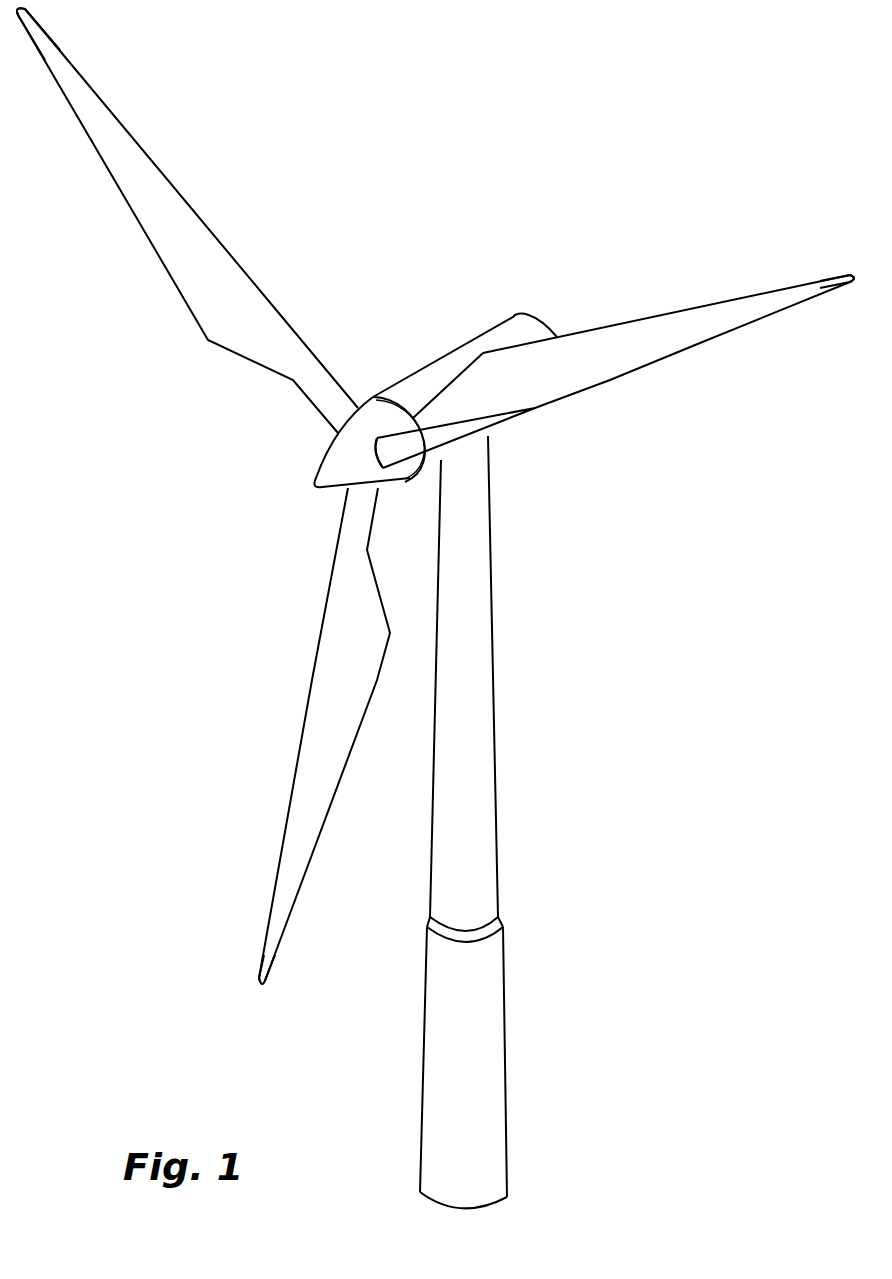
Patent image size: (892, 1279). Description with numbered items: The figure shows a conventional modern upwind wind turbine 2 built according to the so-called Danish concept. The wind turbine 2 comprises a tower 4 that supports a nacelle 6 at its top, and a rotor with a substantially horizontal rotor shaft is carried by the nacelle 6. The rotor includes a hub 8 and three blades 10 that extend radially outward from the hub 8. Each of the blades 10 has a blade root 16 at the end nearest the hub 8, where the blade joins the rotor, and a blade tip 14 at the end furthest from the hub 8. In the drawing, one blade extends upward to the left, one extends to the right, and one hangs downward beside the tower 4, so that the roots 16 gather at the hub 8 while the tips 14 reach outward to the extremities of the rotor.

The wind turbine 2 is at (592, 758).
The tower 4 is at (483, 682).
The nacelle 6 is at (427, 378).
The hub 8 is at (336, 464).
The blades 10 is at (220, 312).
The blade tip 14 is at (68, 66).
The blade root 16 is at (345, 418).